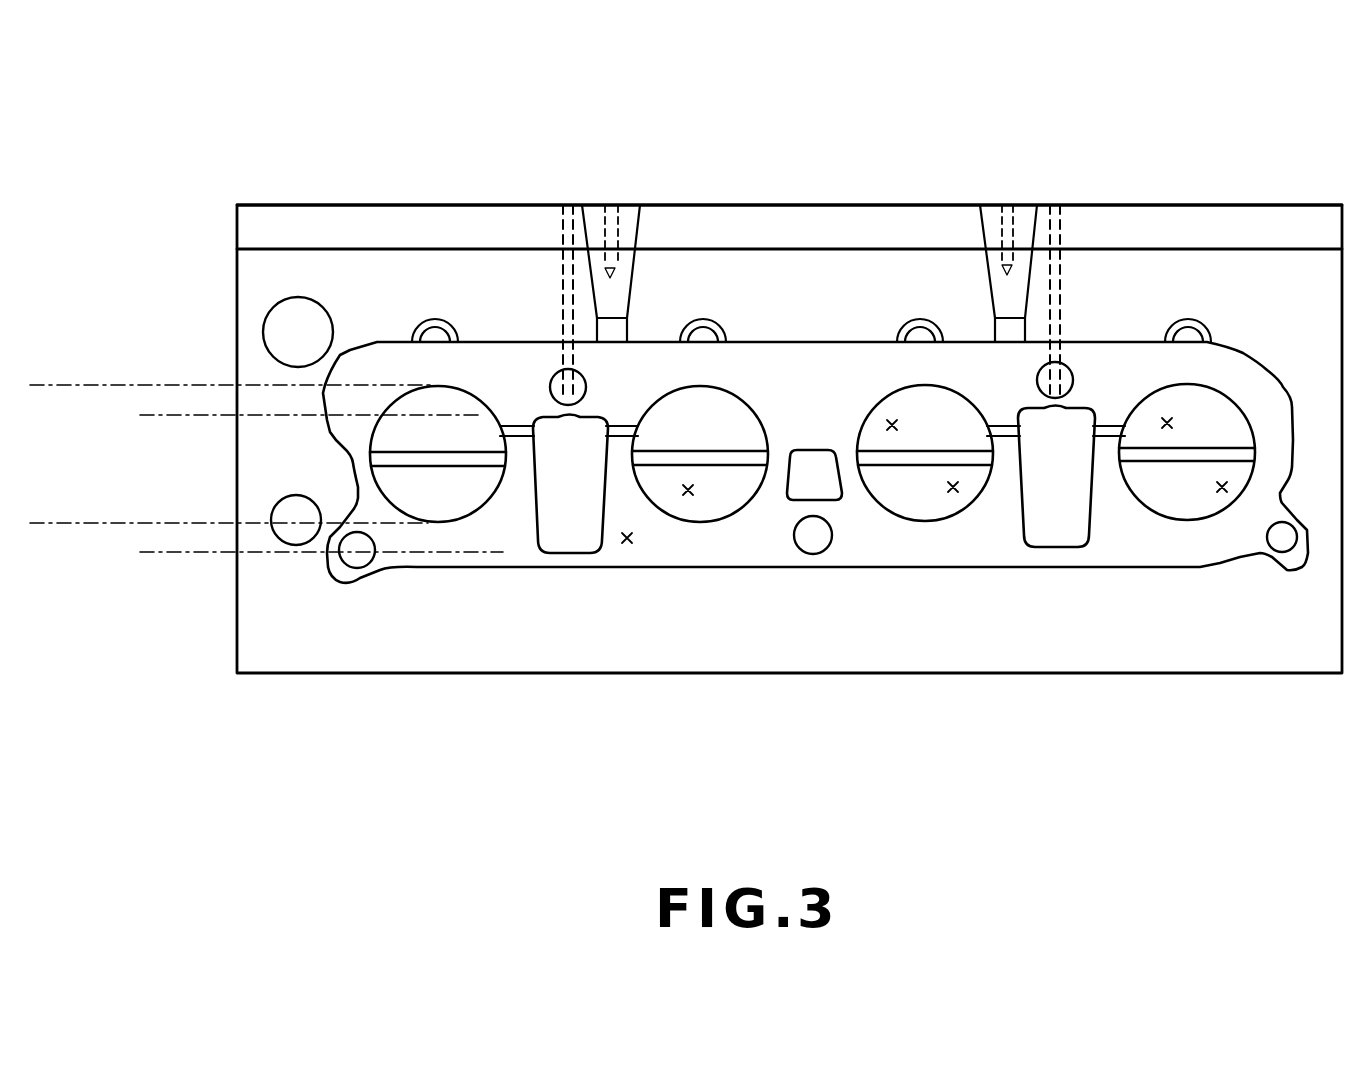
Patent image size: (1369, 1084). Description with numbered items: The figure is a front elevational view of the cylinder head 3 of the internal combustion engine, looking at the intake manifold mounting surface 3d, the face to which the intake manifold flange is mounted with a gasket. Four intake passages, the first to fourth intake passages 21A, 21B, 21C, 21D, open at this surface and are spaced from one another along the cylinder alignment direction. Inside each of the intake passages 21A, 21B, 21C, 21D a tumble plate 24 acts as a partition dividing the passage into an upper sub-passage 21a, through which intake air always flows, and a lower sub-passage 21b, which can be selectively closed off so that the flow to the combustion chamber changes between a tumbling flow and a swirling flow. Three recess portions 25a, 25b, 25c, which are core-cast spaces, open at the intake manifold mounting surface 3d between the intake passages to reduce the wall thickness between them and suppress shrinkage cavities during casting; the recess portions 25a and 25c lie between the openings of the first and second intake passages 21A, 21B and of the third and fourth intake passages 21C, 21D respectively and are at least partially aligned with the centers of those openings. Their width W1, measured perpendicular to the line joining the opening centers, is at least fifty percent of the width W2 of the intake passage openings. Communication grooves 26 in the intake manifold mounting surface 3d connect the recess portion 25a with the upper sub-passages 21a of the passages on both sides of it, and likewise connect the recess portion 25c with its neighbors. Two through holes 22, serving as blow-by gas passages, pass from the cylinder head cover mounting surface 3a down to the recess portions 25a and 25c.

The cylinder head 3 is at (823, 199).
The cylinder head cover mounting surface 3a is at (1233, 205).
The intake manifold mounting surface 3d is at (627, 542).
The through hole 22 is at (565, 292).
The first intake passage 21A is at (485, 757).
The second intake passage 21B is at (693, 524).
The third intake passage 21C is at (1030, 768).
The fourth intake passage 21D is at (1305, 768).
The upper sub-passage 21a is at (727, 403).
The lower sub-passage 21b is at (440, 502).
The tumble plate 24 is at (490, 457).
The recess portion 25a is at (562, 537).
The recess portion 25b is at (830, 492).
The recess portion 25c is at (1050, 520).
The communication groove 26 is at (517, 430).
The width of recess portion W1 is at (163, 416).
The width of intake passage opening W2 is at (63, 386).